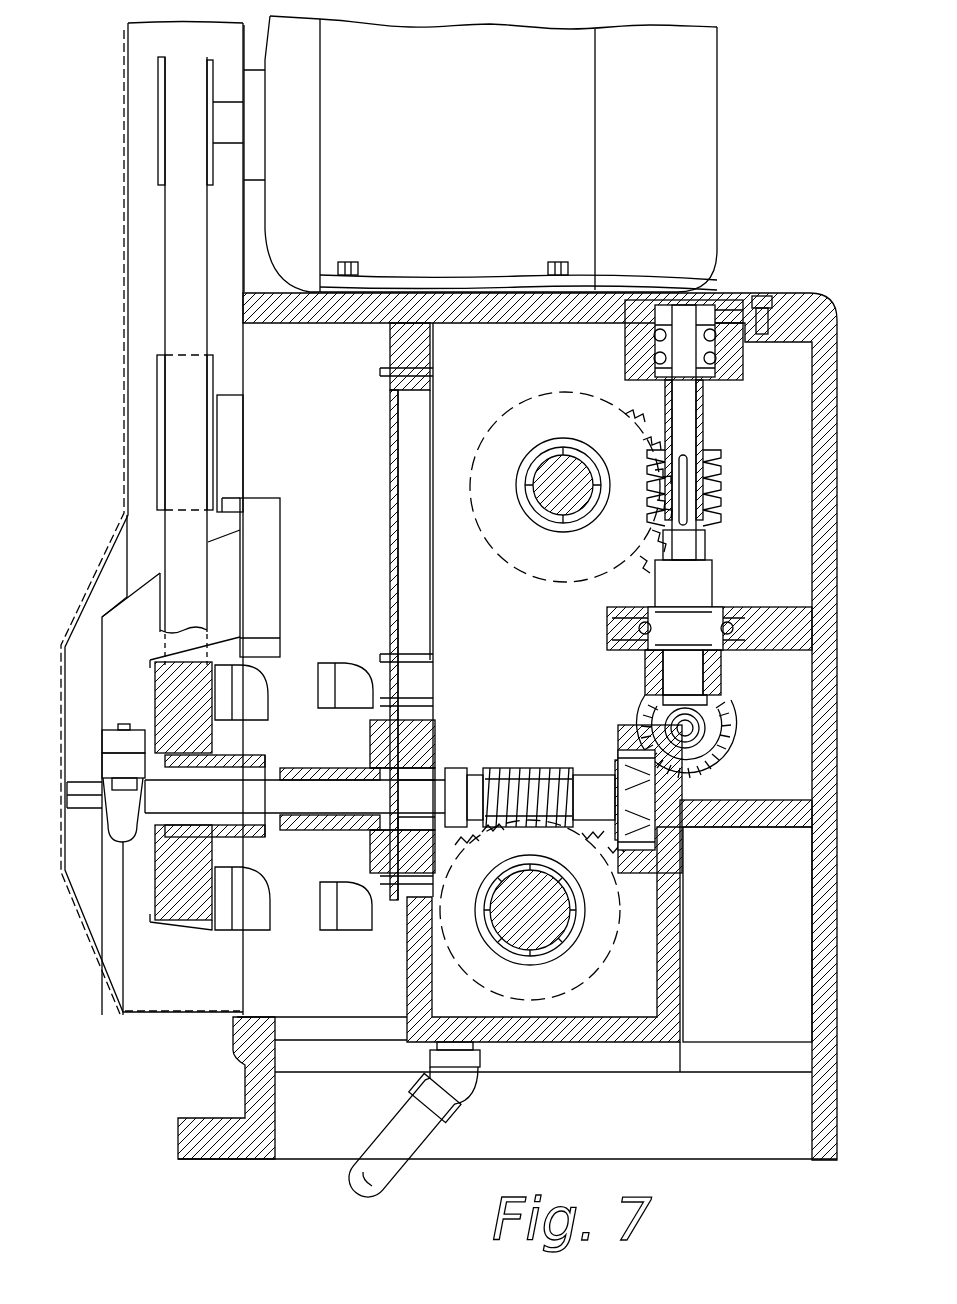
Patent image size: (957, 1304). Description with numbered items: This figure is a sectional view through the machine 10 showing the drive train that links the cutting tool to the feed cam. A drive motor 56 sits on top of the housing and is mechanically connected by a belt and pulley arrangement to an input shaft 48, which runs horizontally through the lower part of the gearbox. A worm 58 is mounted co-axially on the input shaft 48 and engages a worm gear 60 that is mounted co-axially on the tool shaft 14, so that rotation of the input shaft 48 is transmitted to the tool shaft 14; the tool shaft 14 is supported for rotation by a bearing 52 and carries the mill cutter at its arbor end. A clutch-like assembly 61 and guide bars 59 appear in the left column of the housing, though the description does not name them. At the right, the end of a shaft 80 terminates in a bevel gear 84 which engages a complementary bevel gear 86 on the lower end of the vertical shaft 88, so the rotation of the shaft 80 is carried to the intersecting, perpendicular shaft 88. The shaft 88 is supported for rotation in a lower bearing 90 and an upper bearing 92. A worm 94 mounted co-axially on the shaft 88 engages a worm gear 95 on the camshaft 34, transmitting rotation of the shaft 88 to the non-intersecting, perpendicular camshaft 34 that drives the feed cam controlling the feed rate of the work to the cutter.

The machine 10 is at (122, 381).
The tool shaft 14 is at (548, 920).
The camshaft 34 is at (553, 502).
The input shaft 48 is at (355, 790).
The bearing 52 is at (190, 330).
The drive motor 56 is at (695, 150).
The worm 58 is at (512, 768).
The guide bars 59 is at (160, 110).
The worm gear 60 is at (560, 985).
The clutch 61 is at (195, 722).
The shaft 80 is at (692, 730).
The bevel gear 84 is at (725, 756).
The bevel gear 86 is at (712, 668).
The shaft 88 is at (705, 430).
The bearing 90 is at (742, 615).
The bearing 92 is at (742, 302).
The worm 94 is at (720, 486).
The worm gear 95 is at (522, 412).